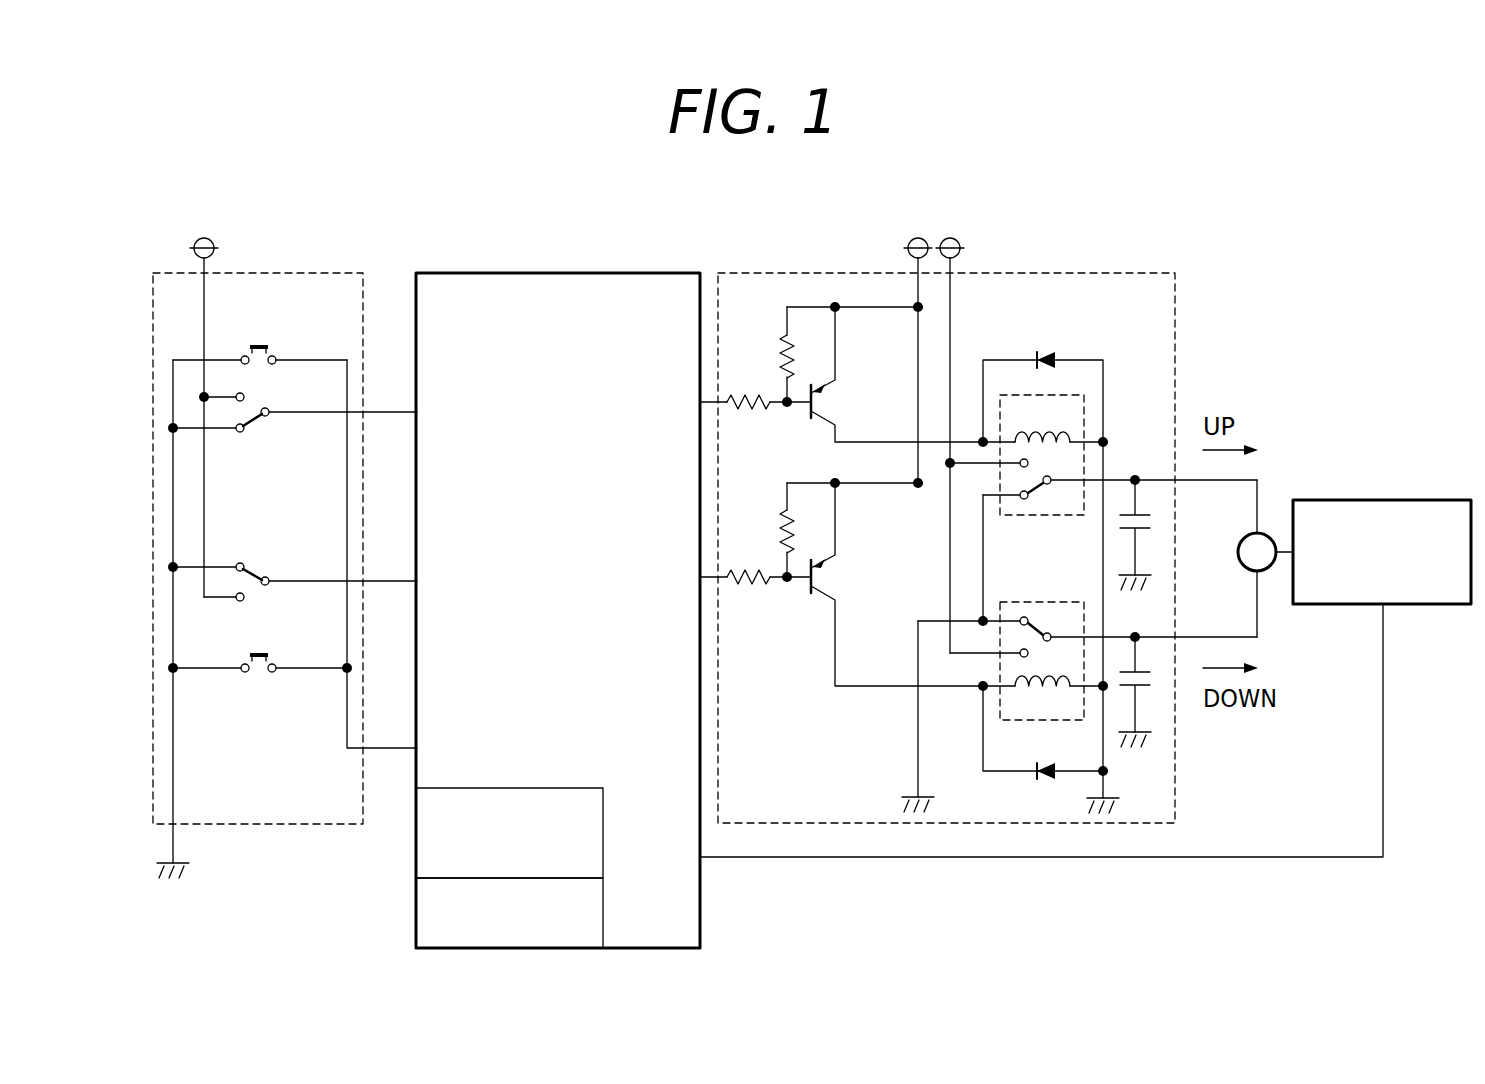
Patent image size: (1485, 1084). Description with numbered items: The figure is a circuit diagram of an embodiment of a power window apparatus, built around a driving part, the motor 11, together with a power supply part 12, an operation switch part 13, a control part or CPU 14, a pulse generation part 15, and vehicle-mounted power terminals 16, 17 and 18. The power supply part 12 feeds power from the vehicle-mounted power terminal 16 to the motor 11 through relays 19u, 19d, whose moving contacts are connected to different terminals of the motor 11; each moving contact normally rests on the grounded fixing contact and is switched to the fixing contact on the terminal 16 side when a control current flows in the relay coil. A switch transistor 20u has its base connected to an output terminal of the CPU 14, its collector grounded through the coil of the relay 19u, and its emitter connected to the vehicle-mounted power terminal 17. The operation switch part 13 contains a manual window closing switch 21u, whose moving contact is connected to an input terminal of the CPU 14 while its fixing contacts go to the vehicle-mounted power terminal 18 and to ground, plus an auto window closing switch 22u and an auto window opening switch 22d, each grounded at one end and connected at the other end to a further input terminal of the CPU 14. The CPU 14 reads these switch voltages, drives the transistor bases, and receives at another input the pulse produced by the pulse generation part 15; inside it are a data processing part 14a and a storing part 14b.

The motor 11 is at (1238, 540).
The power supply part 12 is at (1178, 295).
The operation switch part 13 is at (335, 272).
The control part (CPU) 14 is at (558, 584).
The data processing part 14a is at (603, 805).
The storing part 14b is at (603, 915).
The pulse generation part 15 is at (1430, 500).
The vehicle-mounted power terminal 16 is at (954, 238).
The vehicle-mounted power terminal 17 is at (914, 238).
The vehicle-mounted power terminal 18 is at (214, 244).
The relay 19u is at (1050, 515).
The relay 19d is at (1020, 600).
The switch transistor 20u is at (828, 398).
The manual window closing switch (UP) 21u is at (256, 437).
The auto window closing switch (U-AUTO) 22u is at (260, 343).
The auto window opening switch (D-AUTO) 22d is at (255, 558).